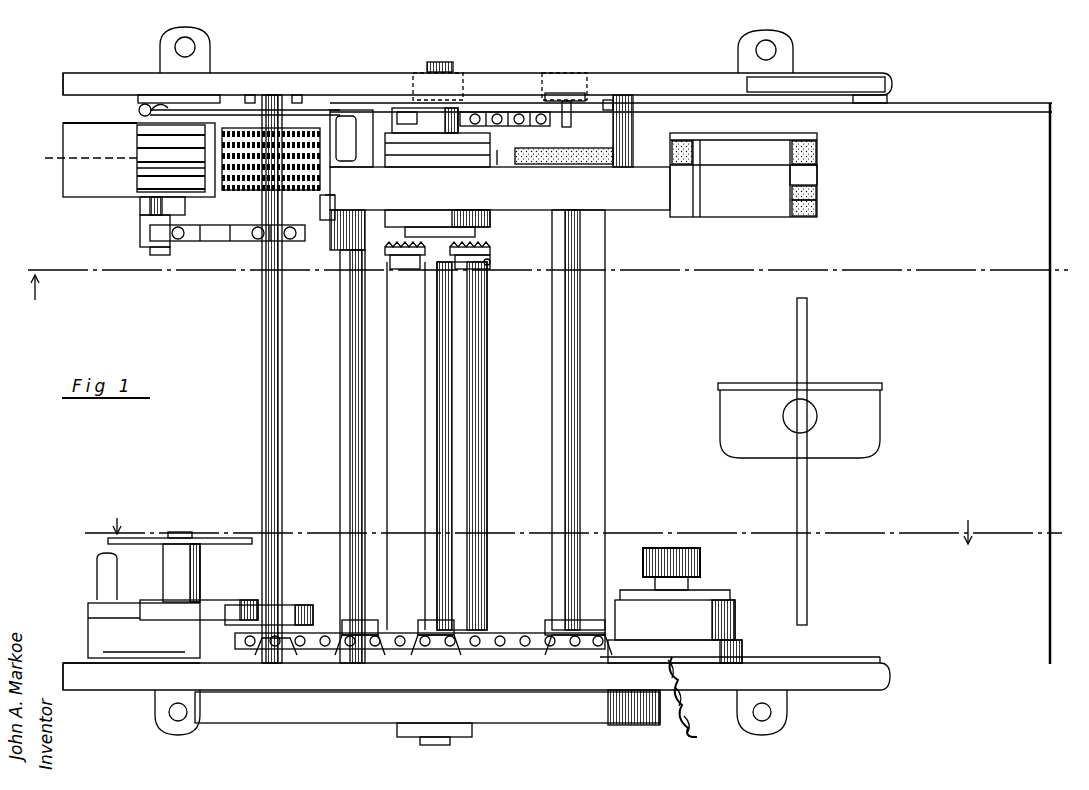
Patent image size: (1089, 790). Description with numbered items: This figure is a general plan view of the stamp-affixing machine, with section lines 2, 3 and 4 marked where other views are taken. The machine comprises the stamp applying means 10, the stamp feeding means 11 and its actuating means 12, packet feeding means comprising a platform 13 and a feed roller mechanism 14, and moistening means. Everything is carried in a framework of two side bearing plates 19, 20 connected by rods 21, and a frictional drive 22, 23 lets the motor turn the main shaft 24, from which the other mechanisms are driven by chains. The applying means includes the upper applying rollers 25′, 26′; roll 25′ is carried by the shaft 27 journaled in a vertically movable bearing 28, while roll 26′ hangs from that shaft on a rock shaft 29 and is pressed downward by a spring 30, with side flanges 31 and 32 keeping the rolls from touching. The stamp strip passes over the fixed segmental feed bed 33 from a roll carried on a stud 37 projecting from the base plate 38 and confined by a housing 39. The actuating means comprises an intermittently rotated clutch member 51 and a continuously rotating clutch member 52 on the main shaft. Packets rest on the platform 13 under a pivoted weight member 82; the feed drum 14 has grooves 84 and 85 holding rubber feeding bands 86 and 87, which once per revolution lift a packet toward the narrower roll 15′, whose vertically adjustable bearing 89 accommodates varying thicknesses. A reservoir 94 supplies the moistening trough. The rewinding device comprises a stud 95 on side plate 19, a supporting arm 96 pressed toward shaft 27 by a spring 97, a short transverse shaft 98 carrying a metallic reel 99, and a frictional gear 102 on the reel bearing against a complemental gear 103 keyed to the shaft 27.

The section line 2— 2 is at (569, 531).
The section line 3— 3 is at (554, 280).
The section line 4— 4 is at (265, 155).
The stamp applying means 10 is at (227, 220).
The stamp feeding means 11 is at (318, 197).
The actuating means 12 is at (452, 252).
The platform 13 is at (809, 455).
The feed roller mechanism 14 is at (818, 172).
The roll 15' is at (564, 170).
The side bearing plate 19 is at (165, 672).
The side bearing plate 20 is at (527, 84).
The rods 21 is at (342, 433).
The frictional drive 22 is at (697, 712).
The frictional drive 23 is at (427, 707).
The main shaft 24 is at (425, 740).
The upper applying roller 25' is at (271, 131).
The upper applying roller 26' is at (148, 158).
The shaft 27 is at (270, 300).
The vertically movable bearing 28 is at (252, 100).
The rock shaft 29 is at (140, 207).
The spring 30 is at (139, 110).
The side flange 31 is at (447, 146).
The side flange 32 is at (137, 184).
The feed bed 33 is at (325, 220).
The stud 37 is at (145, 225).
The base plate 38 is at (137, 123).
The housing 39 is at (63, 194).
The intermittently rotated clutch member 51 is at (490, 237).
The continuously rotating clutch member 52 is at (490, 265).
The pivoted weight member 82 is at (743, 175).
The groove 84 is at (818, 136).
The groove 85 is at (818, 188).
The rubber feeding band 86 is at (818, 152).
The rubber feeding band 87 is at (818, 203).
The vertically adjustable bearing 89 is at (566, 97).
The reservoir 94 is at (476, 462).
The stud 95 is at (97, 596).
The supporting arm 96 is at (146, 650).
The spring 97 is at (442, 62).
The short transverse shaft 98 is at (178, 530).
The metallic reel 99 is at (232, 537).
The frictional gear 102 is at (232, 603).
The complemental gear 103 is at (300, 605).